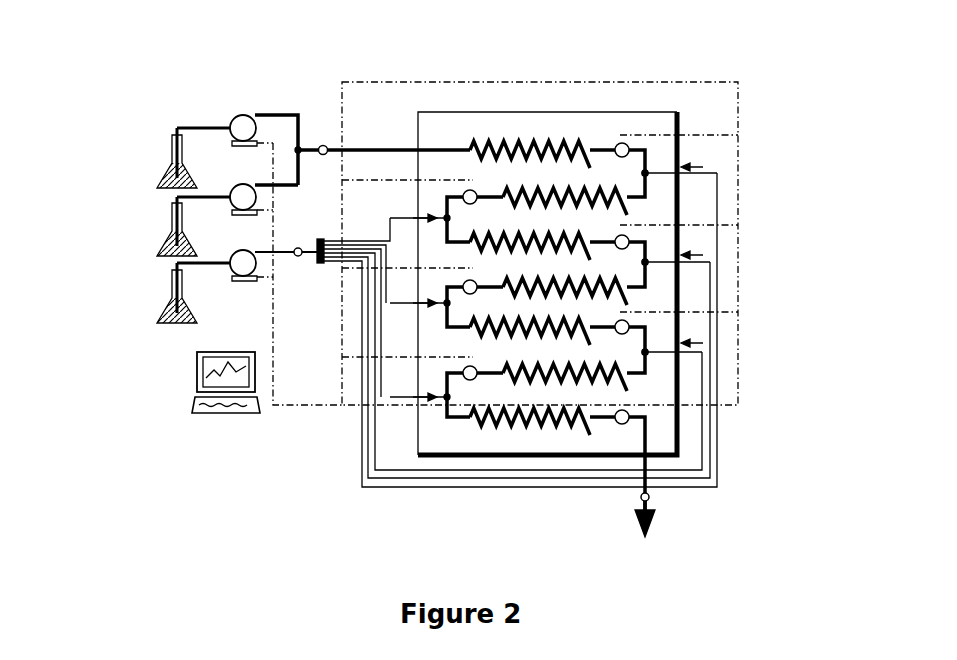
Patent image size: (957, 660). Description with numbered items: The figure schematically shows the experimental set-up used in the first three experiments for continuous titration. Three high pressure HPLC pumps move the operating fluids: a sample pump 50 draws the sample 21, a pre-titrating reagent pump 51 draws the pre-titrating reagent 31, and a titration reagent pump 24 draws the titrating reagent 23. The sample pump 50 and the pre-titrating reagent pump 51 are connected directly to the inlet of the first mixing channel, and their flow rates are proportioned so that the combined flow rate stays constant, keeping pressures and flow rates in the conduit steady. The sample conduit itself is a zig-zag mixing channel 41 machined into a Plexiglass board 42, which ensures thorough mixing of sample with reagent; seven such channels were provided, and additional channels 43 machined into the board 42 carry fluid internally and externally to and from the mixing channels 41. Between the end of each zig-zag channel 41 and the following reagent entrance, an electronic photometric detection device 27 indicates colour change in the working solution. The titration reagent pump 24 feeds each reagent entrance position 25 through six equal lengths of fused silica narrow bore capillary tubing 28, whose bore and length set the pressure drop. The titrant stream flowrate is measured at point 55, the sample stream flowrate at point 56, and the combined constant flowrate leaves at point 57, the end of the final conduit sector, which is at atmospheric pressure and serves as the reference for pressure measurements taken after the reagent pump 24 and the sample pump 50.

The sample 21 is at (170, 158).
The pre-titrating reagent 31 is at (170, 227).
The titrating reagent 23 is at (170, 298).
The sample pump 50 is at (243, 113).
The pre-titrating reagent pump 51 is at (243, 183).
The titration reagent pump 24 is at (243, 282).
The sample stream flow measurement point 56 is at (323, 144).
The titrant stream flow measurement point 55 is at (297, 256).
The Plexiglass board 42 is at (448, 128).
The zig-zag mixing channel 41 is at (573, 140).
The detection device 27 is at (618, 142).
The additional channels 43 is at (632, 237).
The reagent entrance positions 25 is at (650, 350).
The capillary tubing 28 is at (717, 367).
The outlet measurement point 57 is at (630, 498).